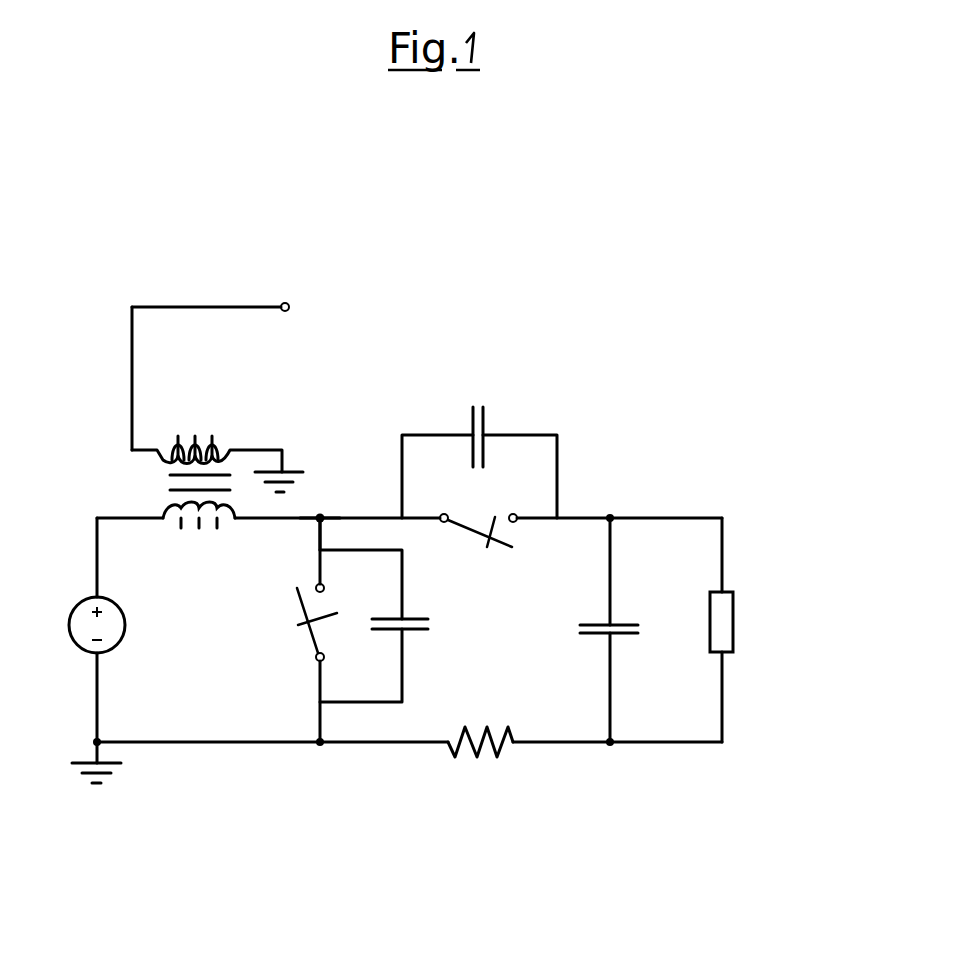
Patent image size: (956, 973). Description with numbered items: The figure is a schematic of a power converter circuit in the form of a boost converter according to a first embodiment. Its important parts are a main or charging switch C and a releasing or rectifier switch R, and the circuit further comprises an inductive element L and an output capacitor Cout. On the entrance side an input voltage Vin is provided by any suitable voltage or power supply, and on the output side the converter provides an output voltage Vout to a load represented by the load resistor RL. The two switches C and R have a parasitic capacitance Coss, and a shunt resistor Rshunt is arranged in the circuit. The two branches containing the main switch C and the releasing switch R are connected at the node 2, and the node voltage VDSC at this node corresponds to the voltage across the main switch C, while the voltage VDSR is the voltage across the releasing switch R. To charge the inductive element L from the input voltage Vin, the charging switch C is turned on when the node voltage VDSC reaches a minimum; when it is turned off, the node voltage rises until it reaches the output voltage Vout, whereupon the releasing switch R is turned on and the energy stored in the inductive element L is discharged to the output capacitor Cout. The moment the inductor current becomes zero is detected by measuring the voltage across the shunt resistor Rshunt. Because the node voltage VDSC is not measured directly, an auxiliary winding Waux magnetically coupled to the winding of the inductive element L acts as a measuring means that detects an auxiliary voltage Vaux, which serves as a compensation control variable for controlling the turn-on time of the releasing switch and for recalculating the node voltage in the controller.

The node 2 is at (313, 522).
The main switch C is at (302, 630).
The releasing switch R is at (478, 550).
The inductive element L is at (199, 534).
The parasitic capacitance Coss is at (438, 551).
The output capacitor Cout is at (584, 630).
The load resistor RL is at (694, 622).
The shunt resistor Rshunt is at (482, 739).
The input voltage Vin is at (76, 625).
The output voltage Vout is at (768, 623).
The auxiliary voltage Vaux is at (240, 374).
The auxiliary winding Waux is at (217, 441).
The node voltage VDSC is at (343, 608).
The voltage across the releasing switch VDSR is at (475, 488).